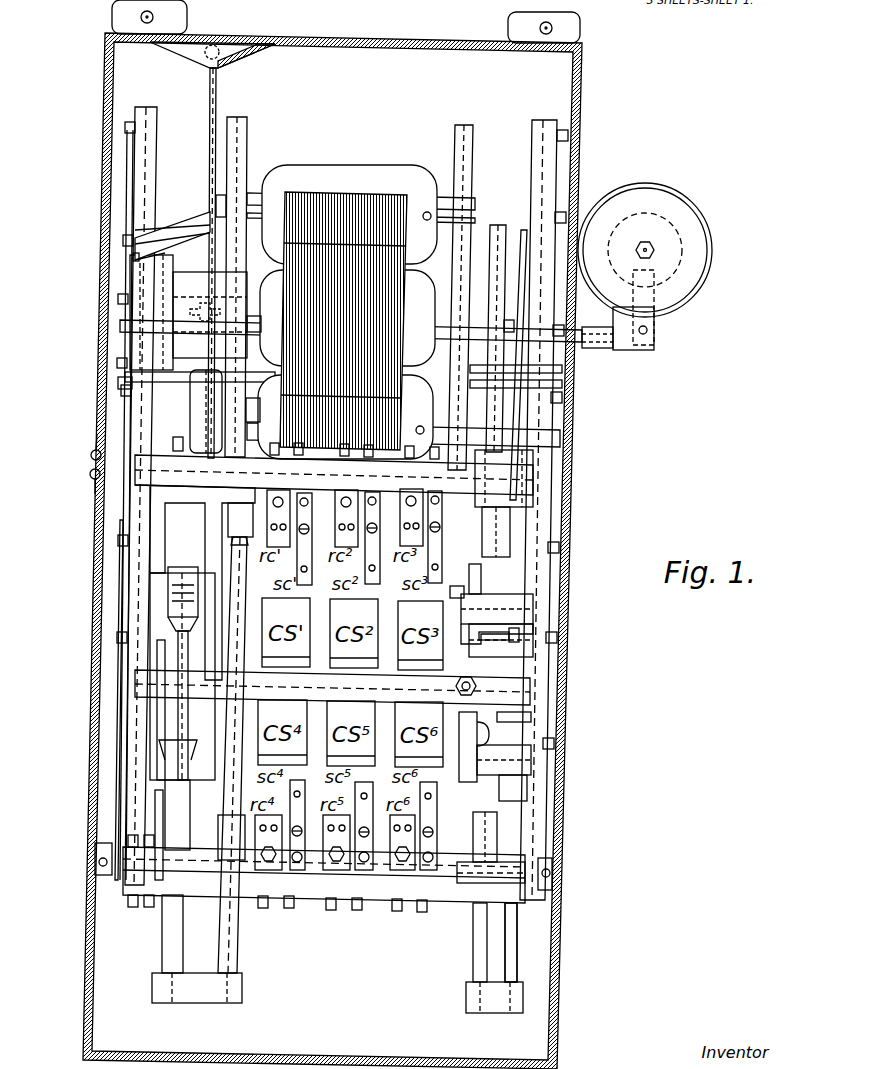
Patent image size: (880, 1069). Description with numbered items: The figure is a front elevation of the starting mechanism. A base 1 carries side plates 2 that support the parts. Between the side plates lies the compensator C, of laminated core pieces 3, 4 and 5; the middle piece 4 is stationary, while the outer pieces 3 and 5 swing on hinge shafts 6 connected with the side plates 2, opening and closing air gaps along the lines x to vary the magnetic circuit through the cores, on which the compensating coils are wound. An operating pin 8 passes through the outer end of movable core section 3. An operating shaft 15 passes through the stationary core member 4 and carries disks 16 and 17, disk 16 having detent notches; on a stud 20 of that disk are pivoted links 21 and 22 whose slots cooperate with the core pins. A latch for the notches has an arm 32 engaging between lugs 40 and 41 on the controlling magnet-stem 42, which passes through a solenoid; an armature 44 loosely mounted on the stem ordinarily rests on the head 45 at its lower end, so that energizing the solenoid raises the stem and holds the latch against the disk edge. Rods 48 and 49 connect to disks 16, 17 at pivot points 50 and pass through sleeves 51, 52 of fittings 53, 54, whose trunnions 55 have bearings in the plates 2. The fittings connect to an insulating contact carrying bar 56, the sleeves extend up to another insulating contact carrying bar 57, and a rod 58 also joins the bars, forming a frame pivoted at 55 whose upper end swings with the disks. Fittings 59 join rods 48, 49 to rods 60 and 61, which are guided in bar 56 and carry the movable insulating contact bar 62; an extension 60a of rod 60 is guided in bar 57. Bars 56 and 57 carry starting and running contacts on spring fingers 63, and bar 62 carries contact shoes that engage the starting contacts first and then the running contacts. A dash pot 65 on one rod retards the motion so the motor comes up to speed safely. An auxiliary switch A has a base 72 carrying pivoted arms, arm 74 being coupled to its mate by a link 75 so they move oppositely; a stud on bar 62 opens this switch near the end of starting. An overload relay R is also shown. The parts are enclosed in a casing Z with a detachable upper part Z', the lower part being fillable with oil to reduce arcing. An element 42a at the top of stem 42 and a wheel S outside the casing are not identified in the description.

The base 1 is at (570, 100).
The side plate 2 is at (136, 160).
The core piece 3 is at (400, 215).
The core piece 4 is at (390, 302).
The core piece 5 is at (393, 417).
The hinge shaft 6 is at (506, 255).
The operating pin 8 is at (216, 203).
The operating shaft 15 is at (590, 349).
The disk 16 is at (205, 272).
The disk 17 is at (472, 228).
The stud 20 is at (255, 318).
The link 21 is at (227, 142).
The link 22 is at (258, 403).
The latch arm 32 is at (135, 233).
The lug 40 is at (135, 258).
The lug 41 is at (205, 222).
The controlling magnet-stem 42 is at (216, 93).
The gusset support 42a is at (250, 58).
The armature 44 is at (190, 400).
The head 45 is at (188, 447).
The rod 48 is at (118, 384).
The rod 49 is at (520, 445).
The pivot point 50 is at (118, 299).
The sleeve 51 is at (155, 812).
The sleeve 52 is at (505, 553).
The fitting 53 is at (175, 863).
The fitting 54 is at (478, 880).
The trunnion 55 is at (95, 856).
The insulating contact carrying bar 56 is at (322, 905).
The insulating contact carrying bar 57 is at (533, 486).
The rod 58 is at (120, 720).
The fitting 59 is at (197, 990).
The rod 60 is at (237, 942).
The extension of rod 60 60a is at (243, 573).
The rod 61 is at (517, 962).
The movable insulating contact carrying bar 62 is at (498, 687).
The spring finger 63 is at (304, 529).
The dash pot 65 is at (157, 675).
The base 72 is at (533, 645).
The arm 74 is at (470, 781).
The link 75 is at (454, 685).
The sheave S is at (656, 244).
The compensator C is at (353, 165).
The overload relay R is at (150, 575).
The auxiliary switch A is at (500, 626).
The casing Z is at (76, 504).
The upper part of casing Z' is at (79, 440).
The lines of air gaps x is at (445, 215).